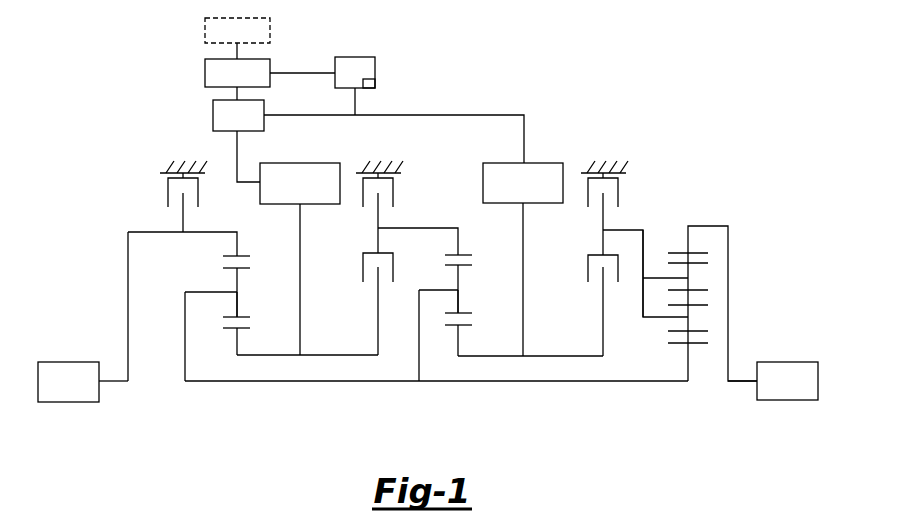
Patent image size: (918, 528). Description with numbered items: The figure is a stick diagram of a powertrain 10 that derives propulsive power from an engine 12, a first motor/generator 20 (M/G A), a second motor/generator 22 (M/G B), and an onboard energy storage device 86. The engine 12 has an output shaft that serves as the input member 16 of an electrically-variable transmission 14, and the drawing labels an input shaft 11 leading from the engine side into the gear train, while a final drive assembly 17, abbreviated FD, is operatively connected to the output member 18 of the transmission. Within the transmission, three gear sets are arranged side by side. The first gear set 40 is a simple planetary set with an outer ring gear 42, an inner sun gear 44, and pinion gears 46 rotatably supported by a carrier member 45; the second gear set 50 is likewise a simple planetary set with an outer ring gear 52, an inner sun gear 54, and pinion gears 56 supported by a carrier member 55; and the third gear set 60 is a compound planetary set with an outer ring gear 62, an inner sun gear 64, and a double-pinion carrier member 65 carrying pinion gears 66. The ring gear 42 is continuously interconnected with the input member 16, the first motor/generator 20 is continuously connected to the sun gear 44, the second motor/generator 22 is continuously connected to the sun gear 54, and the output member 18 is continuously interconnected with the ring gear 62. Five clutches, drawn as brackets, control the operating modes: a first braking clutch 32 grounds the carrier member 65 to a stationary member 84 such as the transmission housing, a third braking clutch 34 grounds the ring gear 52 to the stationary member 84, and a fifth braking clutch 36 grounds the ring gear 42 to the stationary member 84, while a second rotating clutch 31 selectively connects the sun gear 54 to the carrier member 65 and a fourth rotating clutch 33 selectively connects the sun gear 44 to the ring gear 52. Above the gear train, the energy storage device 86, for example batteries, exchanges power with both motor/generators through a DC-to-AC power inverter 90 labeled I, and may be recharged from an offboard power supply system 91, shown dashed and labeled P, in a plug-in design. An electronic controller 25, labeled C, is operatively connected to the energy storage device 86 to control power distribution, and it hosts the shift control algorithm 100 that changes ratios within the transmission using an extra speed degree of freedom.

The powertrain 10 is at (652, 132).
The input member 11 is at (185, 338).
The engine 12 is at (65, 362).
The electrically-variable transmission 14 is at (321, 387).
The input member 16 is at (115, 380).
The final drive assembly 17 is at (793, 362).
The output member 18 is at (740, 381).
The first motor/generator 20 is at (320, 156).
The second motor/generator 22 is at (540, 158).
The controller 25 is at (375, 63).
The algorithm 100 is at (375, 83).
The clutch C2 31 is at (588, 268).
The clutch C1 32 is at (618, 186).
The clutch C4 33 is at (363, 277).
The clutch C3 34 is at (393, 186).
The clutch C5 36 is at (168, 192).
The first gear set 40 is at (253, 313).
The ring gear 42 is at (239, 254).
The sun gear 44 is at (240, 330).
The carrier member 45 is at (198, 292).
The pinion gears 46 is at (237, 282).
The second gear set 50 is at (490, 310).
The ring gear 52 is at (460, 252).
The sun gear 54 is at (460, 327).
The carrier member 55 is at (433, 290).
The pinion gears 56 is at (458, 277).
The third gear set 60 is at (686, 315).
The ring gear 62 is at (680, 252).
The sun gear 64 is at (690, 345).
The carrier member 65 is at (657, 278).
The pinion gears 66 is at (690, 277).
The stationary member 84 is at (168, 168).
The energy storage device 86 is at (205, 73).
The power inverter 90 is at (213, 115).
The offboard power supply system 91 is at (205, 30).